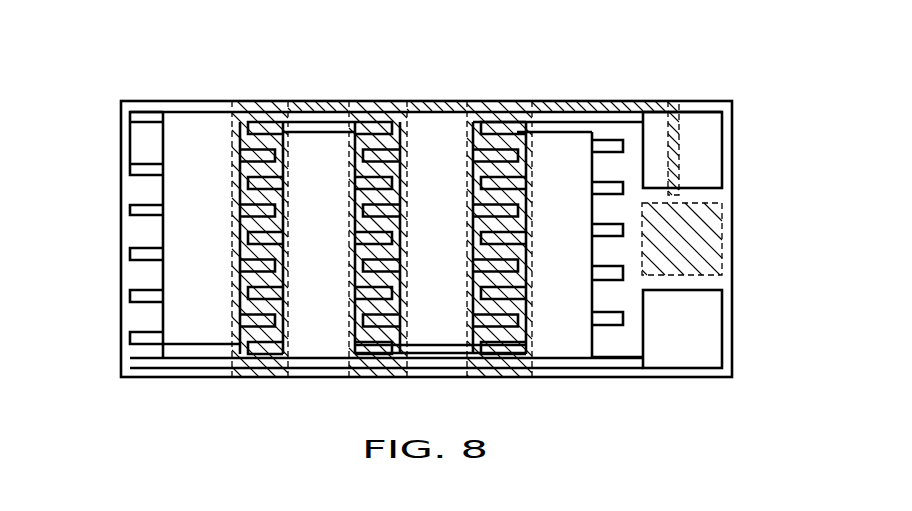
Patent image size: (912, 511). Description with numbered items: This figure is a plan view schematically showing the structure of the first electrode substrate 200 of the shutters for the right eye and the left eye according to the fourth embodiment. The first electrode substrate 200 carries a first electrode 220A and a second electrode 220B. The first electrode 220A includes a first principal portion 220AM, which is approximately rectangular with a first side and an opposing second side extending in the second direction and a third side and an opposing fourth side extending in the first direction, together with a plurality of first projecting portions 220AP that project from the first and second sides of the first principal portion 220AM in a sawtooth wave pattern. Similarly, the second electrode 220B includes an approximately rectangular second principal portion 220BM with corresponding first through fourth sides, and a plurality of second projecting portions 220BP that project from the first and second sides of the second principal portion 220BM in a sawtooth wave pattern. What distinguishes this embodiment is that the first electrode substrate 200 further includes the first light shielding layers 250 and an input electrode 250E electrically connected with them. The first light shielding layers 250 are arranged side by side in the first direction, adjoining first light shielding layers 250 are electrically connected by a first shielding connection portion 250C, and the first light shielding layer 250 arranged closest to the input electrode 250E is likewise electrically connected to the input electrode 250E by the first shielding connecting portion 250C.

The first electrode substrate 200 is at (746, 224).
The first electrode 220A is at (193, 110).
The first principal portion 220AM is at (180, 143).
The first projecting portions 220AP is at (237, 113).
The second electrode 220B is at (321, 127).
The second principal portion 220BM is at (307, 213).
The second projecting portions 220BP is at (383, 122).
The first light shielding layer 250 is at (300, 128).
The first shielding connection portion 250C is at (332, 100).
The input electrode 250E is at (722, 256).